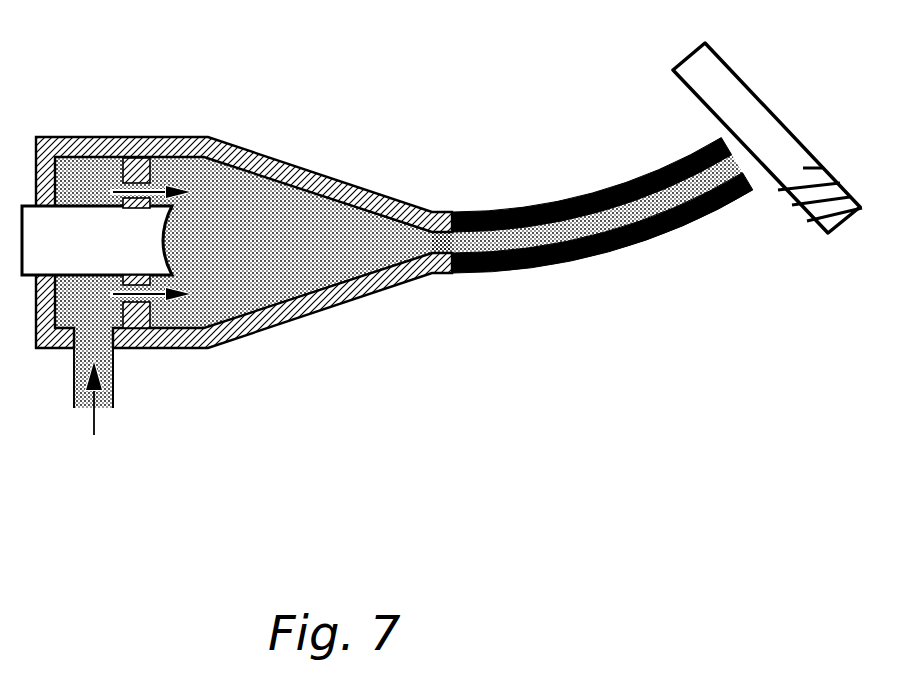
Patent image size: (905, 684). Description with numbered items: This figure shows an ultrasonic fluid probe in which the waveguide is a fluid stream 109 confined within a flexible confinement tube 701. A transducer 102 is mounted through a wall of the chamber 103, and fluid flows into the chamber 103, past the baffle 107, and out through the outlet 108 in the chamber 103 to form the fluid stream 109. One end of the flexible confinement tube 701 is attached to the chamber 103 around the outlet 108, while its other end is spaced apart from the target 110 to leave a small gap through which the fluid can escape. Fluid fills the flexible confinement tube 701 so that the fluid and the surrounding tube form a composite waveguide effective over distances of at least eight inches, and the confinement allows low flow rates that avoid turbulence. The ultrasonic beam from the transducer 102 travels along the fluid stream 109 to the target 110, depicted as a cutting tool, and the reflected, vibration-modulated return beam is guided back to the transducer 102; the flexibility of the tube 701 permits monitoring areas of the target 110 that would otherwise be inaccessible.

The transducer 102 is at (118, 257).
The chamber 103 is at (83, 145).
The baffle 107 is at (143, 163).
The outlet 108 is at (438, 245).
The fluid stream 109 is at (540, 250).
The flexible confinement tube 701 is at (612, 245).
The target 110 is at (717, 90).